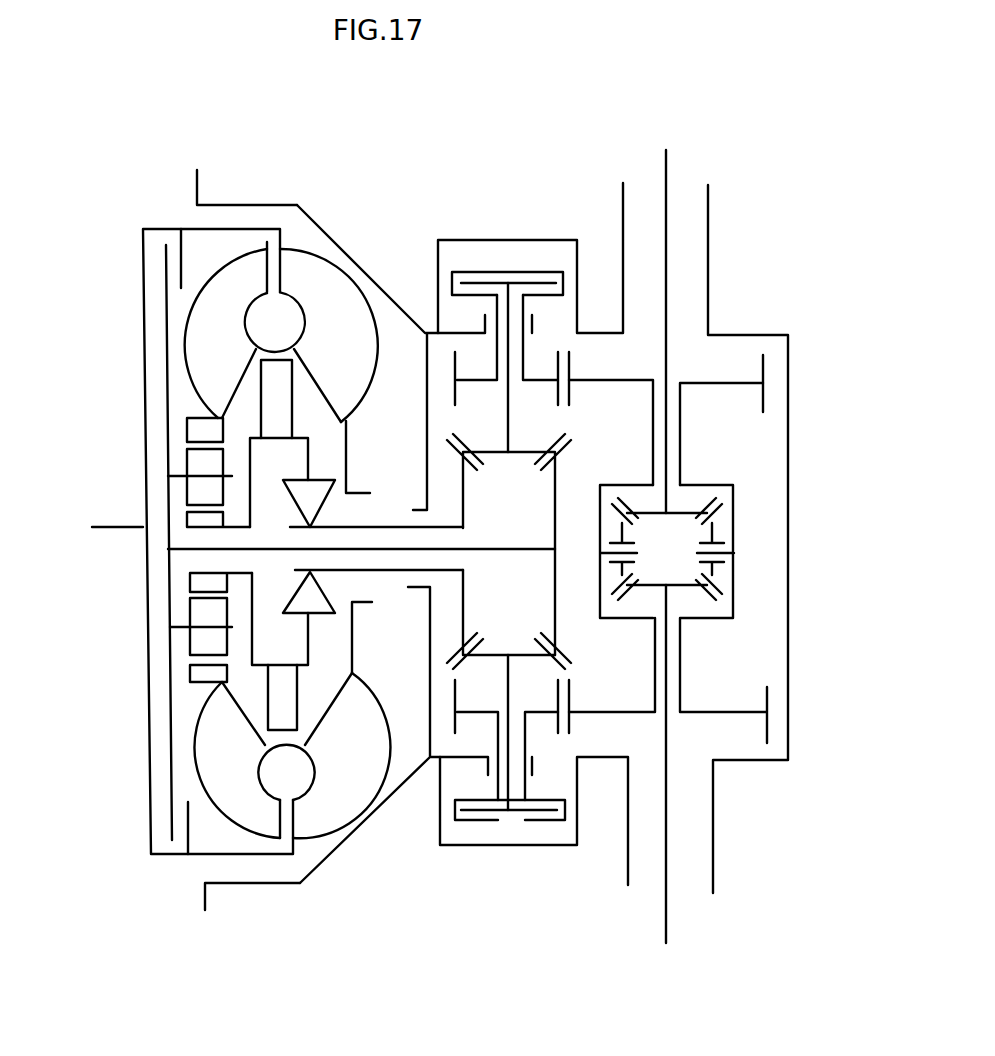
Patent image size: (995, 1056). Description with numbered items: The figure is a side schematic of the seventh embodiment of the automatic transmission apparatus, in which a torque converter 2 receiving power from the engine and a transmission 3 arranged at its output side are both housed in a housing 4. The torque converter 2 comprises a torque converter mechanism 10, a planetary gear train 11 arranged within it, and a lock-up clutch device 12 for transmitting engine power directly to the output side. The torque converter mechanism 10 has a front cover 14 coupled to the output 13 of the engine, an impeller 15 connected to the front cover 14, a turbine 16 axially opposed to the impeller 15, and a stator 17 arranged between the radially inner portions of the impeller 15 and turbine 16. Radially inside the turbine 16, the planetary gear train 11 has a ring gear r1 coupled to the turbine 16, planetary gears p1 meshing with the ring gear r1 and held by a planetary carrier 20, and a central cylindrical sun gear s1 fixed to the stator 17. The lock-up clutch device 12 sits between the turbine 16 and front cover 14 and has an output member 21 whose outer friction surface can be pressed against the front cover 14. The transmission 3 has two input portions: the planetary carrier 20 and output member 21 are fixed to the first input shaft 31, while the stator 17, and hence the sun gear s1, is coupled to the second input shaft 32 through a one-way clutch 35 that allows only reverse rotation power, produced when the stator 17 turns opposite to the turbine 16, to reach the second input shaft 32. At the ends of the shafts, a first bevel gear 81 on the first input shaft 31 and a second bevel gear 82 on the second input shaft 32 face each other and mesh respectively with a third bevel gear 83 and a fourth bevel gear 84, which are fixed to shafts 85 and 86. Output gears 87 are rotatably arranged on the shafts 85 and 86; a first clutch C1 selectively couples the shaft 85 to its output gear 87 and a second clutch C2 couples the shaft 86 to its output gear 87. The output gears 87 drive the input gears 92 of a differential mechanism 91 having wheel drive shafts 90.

The torque converter 2 is at (350, 229).
The transmission 3 is at (475, 220).
The housing 4 is at (307, 210).
The torque converter mechanism 10 is at (354, 270).
The planetary gear train 11 is at (193, 580).
The lock-up clutch device 12 is at (156, 268).
The output 13 is at (121, 514).
The front cover 14 is at (143, 240).
The impeller 15 is at (323, 526).
The turbine 16 is at (229, 526).
The stator 17 is at (280, 546).
The planetary carrier 20 is at (168, 476).
The output member 21 is at (190, 430).
The first input shaft 31 is at (340, 550).
The second input shaft 32 is at (387, 573).
The one-way clutch 35 is at (302, 597).
The first bevel gear 81 is at (555, 480).
The second bevel gear 82 is at (465, 495).
The third bevel gear 83 is at (527, 653).
The fourth bevel gear 84 is at (472, 452).
The shaft 85 is at (512, 690).
The shaft 86 is at (510, 413).
The output gears 87 is at (533, 355).
The wheel drive shafts 90 is at (704, 528).
The differential mechanism 91 is at (719, 374).
The input gears 92 is at (763, 402).
The first clutch C1 is at (537, 812).
The second clutch C2 is at (487, 283).
The ring gear r1 is at (192, 428).
The planetary gears p1 is at (194, 539).
The sun gear s1 is at (193, 552).